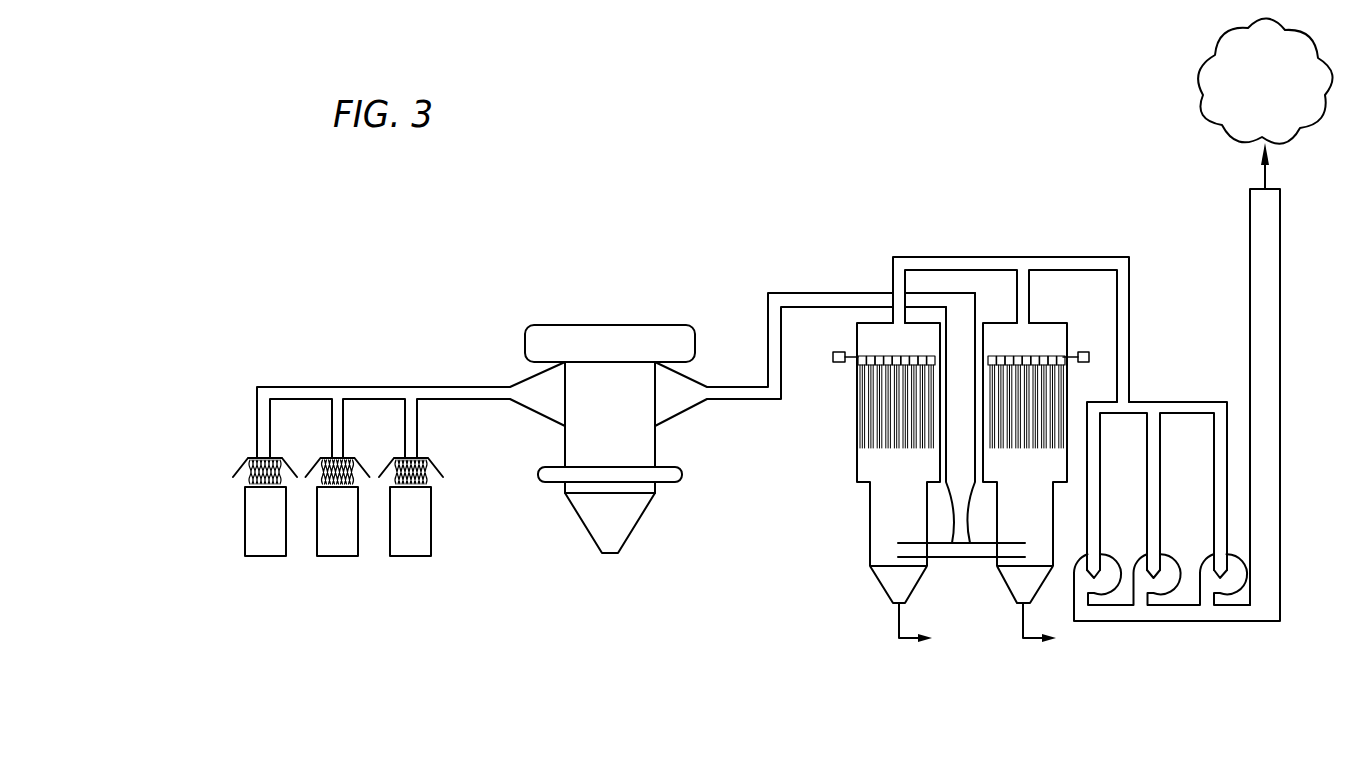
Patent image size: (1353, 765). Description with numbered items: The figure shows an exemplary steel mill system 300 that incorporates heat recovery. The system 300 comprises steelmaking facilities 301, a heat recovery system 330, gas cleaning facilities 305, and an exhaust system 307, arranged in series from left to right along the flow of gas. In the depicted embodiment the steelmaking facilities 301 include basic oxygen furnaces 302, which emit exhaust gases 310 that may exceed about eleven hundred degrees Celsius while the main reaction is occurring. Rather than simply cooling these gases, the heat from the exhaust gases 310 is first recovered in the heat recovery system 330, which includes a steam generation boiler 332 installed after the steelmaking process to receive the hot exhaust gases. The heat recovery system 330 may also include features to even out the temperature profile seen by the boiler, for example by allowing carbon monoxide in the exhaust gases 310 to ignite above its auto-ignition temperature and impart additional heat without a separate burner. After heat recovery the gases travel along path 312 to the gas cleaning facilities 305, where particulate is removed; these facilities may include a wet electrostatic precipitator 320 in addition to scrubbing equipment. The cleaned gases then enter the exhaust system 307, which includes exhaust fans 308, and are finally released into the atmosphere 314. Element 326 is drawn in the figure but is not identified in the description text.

The system 300 is at (270, 351).
The steelmaking facilities 301 is at (279, 539).
The basic oxygen furnaces 302 is at (218, 538).
The gas cleaning facilities 305 is at (1060, 665).
The exhaust system 307 is at (1263, 665).
The exhaust fans 308 is at (1232, 632).
The exhaust gases 310 is at (231, 484).
The path 312 is at (385, 387).
The atmosphere 314 is at (1190, 87).
The wet electrostatic precipitator 320 is at (890, 404).
The filter vessel 326 is at (858, 536).
The heat recovery system 330 is at (712, 578).
The steam generation boiler 332 is at (640, 435).